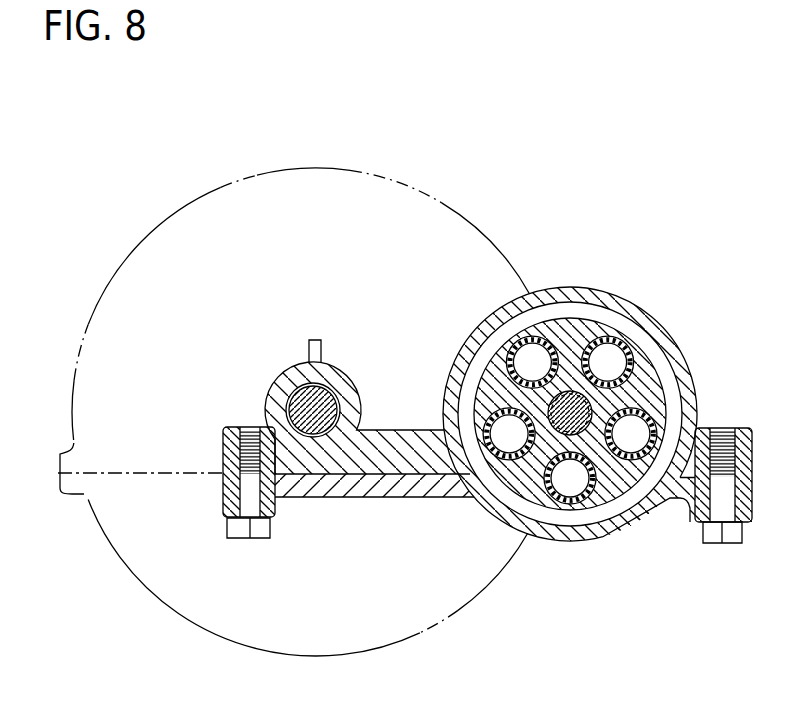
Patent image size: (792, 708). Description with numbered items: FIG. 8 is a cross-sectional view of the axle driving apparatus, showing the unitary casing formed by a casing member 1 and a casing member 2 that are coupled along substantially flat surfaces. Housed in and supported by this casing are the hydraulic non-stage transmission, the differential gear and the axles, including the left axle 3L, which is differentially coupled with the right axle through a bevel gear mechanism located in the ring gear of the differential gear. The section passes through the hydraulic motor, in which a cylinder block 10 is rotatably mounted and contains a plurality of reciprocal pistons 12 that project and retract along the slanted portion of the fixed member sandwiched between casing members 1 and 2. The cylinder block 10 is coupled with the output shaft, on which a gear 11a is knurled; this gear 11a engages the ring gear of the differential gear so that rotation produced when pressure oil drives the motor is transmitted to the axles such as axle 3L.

The casing member 1 is at (442, 203).
The casing member 2 is at (487, 592).
The left axle 3L is at (307, 393).
The cylinder block 10 is at (663, 385).
The gear 11a is at (637, 500).
The reciprocal pistons 12 is at (590, 348).